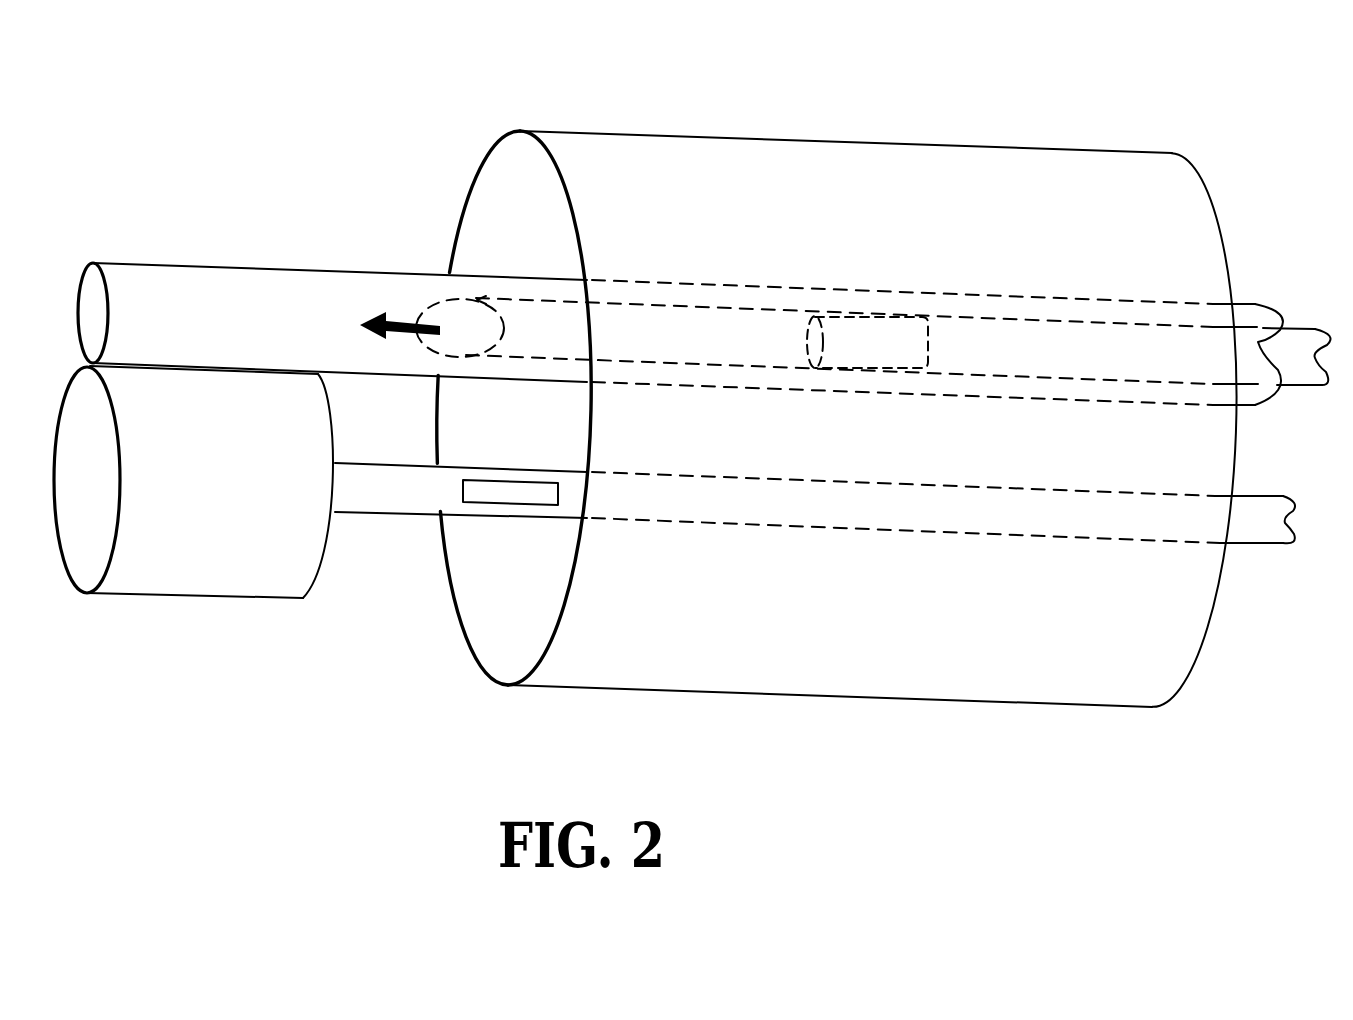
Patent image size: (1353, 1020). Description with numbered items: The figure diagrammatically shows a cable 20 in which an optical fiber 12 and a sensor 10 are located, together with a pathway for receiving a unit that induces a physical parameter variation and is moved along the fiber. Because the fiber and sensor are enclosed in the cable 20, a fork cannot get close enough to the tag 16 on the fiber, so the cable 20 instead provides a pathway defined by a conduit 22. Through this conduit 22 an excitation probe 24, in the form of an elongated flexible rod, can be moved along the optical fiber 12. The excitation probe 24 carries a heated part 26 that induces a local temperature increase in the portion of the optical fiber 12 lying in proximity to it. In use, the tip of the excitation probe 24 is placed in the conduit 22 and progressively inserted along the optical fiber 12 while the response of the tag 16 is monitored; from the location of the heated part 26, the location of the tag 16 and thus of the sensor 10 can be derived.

The sensor 10 is at (208, 555).
The optical fiber 12 is at (385, 490).
The tag 16 is at (492, 493).
The cable 20 is at (732, 180).
The conduit 22 is at (218, 302).
The excitation probe 24 is at (542, 320).
The heated part 26 is at (870, 337).